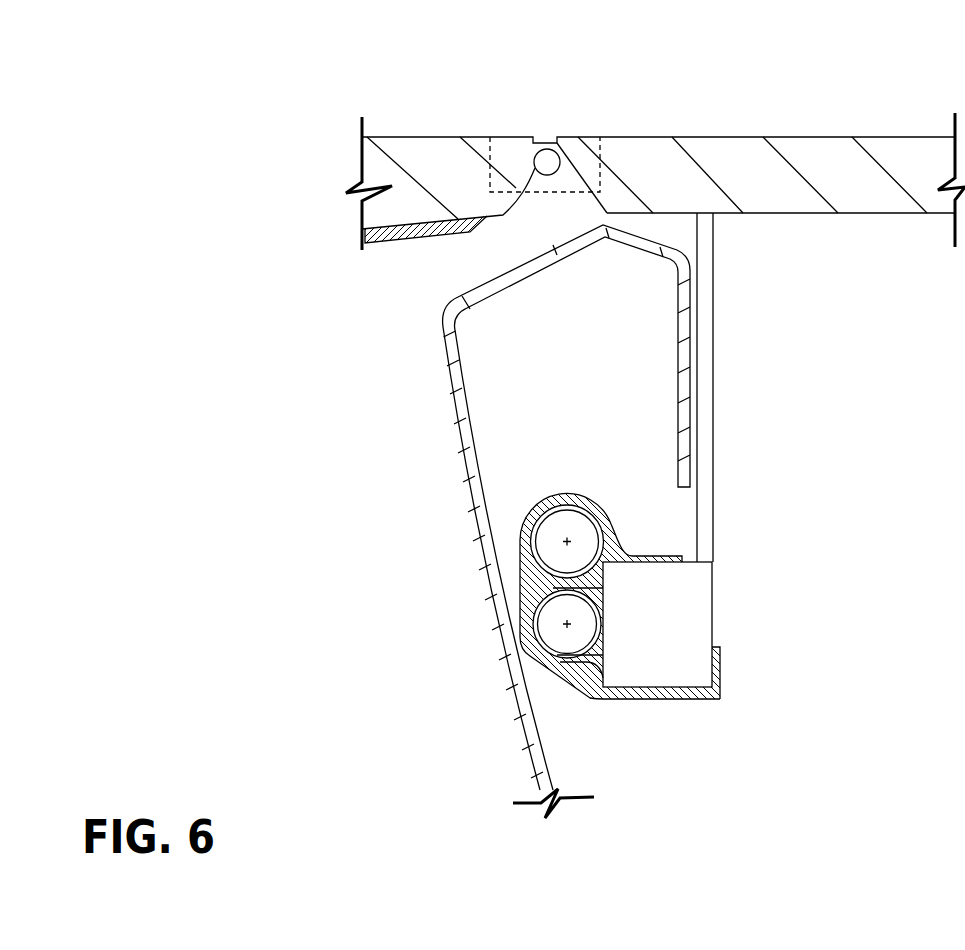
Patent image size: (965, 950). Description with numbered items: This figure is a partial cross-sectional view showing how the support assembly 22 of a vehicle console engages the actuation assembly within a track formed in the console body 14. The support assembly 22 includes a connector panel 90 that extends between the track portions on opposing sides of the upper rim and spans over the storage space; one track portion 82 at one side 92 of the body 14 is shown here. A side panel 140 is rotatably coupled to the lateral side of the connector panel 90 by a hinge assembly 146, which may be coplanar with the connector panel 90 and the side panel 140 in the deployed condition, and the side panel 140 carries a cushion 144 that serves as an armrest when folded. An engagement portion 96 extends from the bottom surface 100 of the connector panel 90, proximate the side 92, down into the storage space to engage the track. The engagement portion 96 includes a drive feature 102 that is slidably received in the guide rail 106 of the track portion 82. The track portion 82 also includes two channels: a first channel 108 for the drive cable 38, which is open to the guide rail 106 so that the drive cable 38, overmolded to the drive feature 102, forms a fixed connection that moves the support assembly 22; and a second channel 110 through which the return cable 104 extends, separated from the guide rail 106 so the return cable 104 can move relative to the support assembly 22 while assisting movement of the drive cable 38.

The body 14 is at (492, 507).
The support assembly 22 is at (649, 265).
The drive cable 38 is at (565, 625).
The track portion 82 is at (520, 578).
The connector panel 90 is at (860, 177).
The side 92 is at (457, 413).
The engagement portion 96 is at (712, 375).
The bottom surface 100 is at (847, 214).
The drive feature 102 is at (663, 593).
The return cable 104 is at (565, 541).
The guide rail 106 is at (663, 687).
The first channel 108 is at (550, 655).
The second channel 110 is at (536, 549).
The side panel 140 is at (440, 162).
The cushion 144 is at (397, 245).
The hinge assembly 146 is at (547, 162).